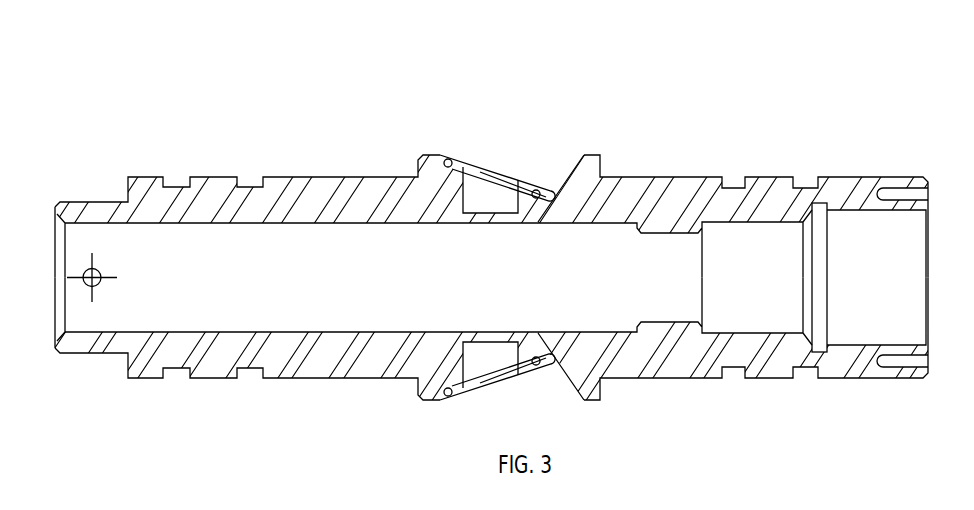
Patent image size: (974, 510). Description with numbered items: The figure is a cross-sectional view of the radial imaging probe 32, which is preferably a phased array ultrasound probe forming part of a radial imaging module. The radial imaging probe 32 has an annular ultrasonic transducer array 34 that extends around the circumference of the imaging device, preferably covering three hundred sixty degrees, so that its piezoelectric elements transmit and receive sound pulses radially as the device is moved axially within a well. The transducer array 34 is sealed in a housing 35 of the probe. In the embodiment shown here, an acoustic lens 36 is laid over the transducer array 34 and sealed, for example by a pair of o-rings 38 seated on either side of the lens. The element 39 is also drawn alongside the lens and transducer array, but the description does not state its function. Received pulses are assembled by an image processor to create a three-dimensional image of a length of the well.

The radial imaging probe 32 is at (487, 241).
The annular ultrasonic transducer array 34 is at (483, 166).
The housing 35 is at (400, 176).
The acoustic lens 36 is at (466, 166).
The o-rings 38 is at (448, 159).
The spring strip 39 is at (497, 176).